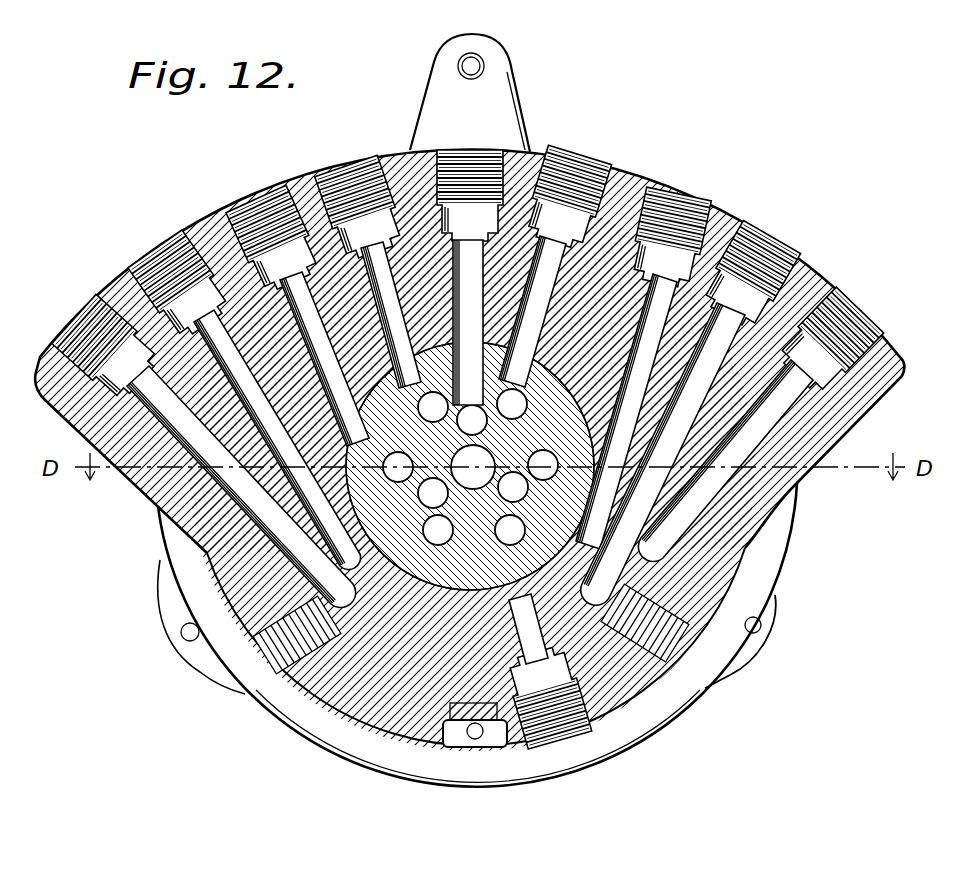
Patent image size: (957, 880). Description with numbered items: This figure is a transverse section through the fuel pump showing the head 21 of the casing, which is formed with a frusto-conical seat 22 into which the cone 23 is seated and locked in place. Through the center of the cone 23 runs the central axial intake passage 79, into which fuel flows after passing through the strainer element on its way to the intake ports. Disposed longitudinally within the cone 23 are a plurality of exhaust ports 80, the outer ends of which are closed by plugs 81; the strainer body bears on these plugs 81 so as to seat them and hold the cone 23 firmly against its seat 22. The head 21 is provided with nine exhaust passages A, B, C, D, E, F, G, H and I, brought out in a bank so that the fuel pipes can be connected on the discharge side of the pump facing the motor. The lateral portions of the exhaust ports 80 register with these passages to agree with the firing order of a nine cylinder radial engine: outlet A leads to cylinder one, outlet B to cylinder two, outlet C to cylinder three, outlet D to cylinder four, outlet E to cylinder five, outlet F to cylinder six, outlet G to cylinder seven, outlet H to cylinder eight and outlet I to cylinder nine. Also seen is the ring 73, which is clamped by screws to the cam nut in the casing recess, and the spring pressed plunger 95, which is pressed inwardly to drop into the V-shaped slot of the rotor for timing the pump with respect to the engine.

The head 21 is at (712, 572).
The frusto-conical seat 22 is at (469, 450).
The cone 23 is at (470, 568).
The ring 73 is at (470, 93).
The central axial intake passage 79 is at (473, 467).
The exhaust ports 80 is at (455, 507).
The plugs 81 is at (277, 654).
The spring pressed plunger 95 is at (472, 738).
The exhaust passage A is at (452, 182).
The exhaust passage B is at (575, 170).
The exhaust passage C is at (675, 202).
The exhaust passage D is at (768, 256).
The exhaust passage E is at (852, 326).
The exhaust passage F is at (72, 318).
The exhaust passage G is at (160, 247).
The exhaust passage H is at (252, 200).
The exhaust passage I is at (343, 167).